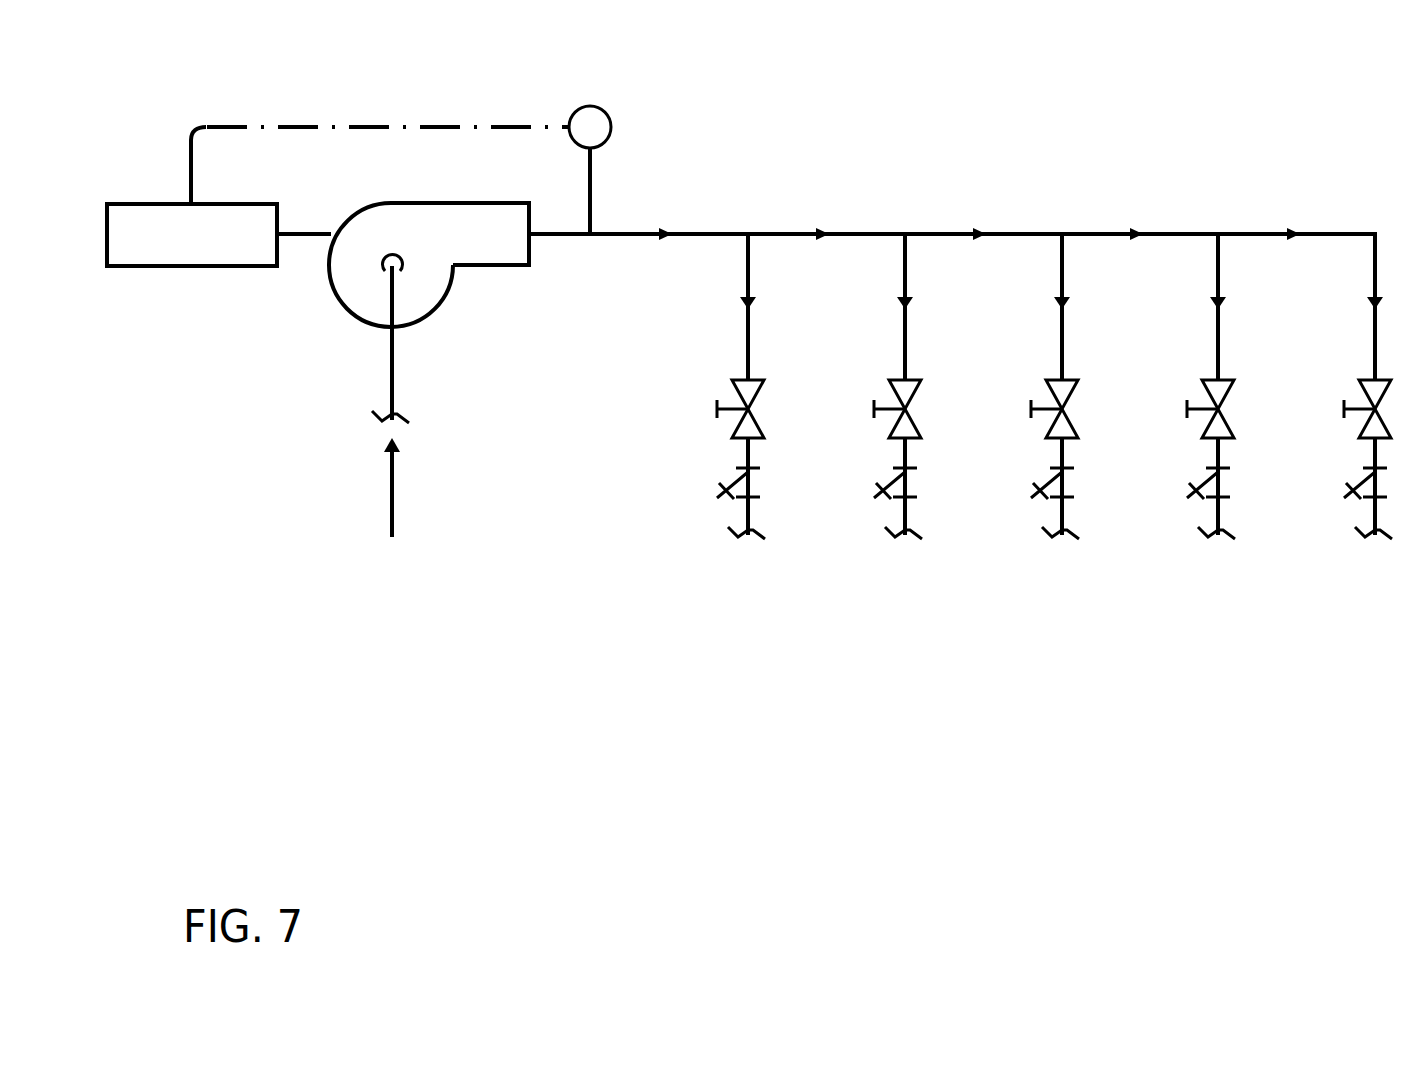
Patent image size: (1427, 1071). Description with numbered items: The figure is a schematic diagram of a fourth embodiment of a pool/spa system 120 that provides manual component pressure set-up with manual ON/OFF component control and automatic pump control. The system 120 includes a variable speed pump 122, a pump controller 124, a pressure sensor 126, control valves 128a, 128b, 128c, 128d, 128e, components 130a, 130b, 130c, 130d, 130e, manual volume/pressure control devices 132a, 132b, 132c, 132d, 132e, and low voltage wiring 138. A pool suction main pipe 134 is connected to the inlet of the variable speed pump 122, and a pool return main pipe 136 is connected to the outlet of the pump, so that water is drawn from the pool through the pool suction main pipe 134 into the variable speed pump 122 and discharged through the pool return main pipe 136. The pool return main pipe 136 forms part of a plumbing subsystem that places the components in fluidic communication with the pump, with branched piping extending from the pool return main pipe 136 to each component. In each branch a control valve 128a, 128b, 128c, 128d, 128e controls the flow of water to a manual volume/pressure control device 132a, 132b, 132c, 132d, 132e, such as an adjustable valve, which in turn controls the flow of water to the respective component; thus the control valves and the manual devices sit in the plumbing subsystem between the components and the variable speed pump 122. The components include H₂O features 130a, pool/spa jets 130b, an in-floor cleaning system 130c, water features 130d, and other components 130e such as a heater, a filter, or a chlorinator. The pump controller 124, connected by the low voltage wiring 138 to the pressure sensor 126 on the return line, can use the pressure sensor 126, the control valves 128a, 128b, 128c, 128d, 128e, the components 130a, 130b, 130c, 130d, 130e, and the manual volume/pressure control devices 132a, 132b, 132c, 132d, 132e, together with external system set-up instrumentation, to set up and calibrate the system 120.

The pool/spa system 120 is at (1302, 108).
The variable speed pump 122 is at (348, 280).
The pump controller 124 is at (145, 218).
The pressure sensor 126 is at (572, 118).
The control valve 128a is at (730, 437).
The control valve 128b is at (887, 437).
The control valve 128c is at (1044, 437).
The control valve 128d is at (1200, 437).
The control valve 128e is at (1357, 437).
The H₂O features 130a is at (712, 592).
The pool/spa jets 130b is at (869, 592).
The in-floor cleaning system 130c is at (1026, 592).
The water features 130d is at (1182, 592).
The other components 130e is at (1337, 592).
The manual volume/pressure control device 132a is at (723, 490).
The manual volume/pressure control device 132b is at (880, 490).
The manual volume/pressure control device 132c is at (1037, 490).
The manual volume/pressure control device 132d is at (1193, 490).
The manual volume/pressure control device 132e is at (1347, 490).
The pool suction main pipe 134 is at (400, 357).
The pool return main pipe 136 is at (625, 246).
The low voltage wiring 138 is at (378, 125).